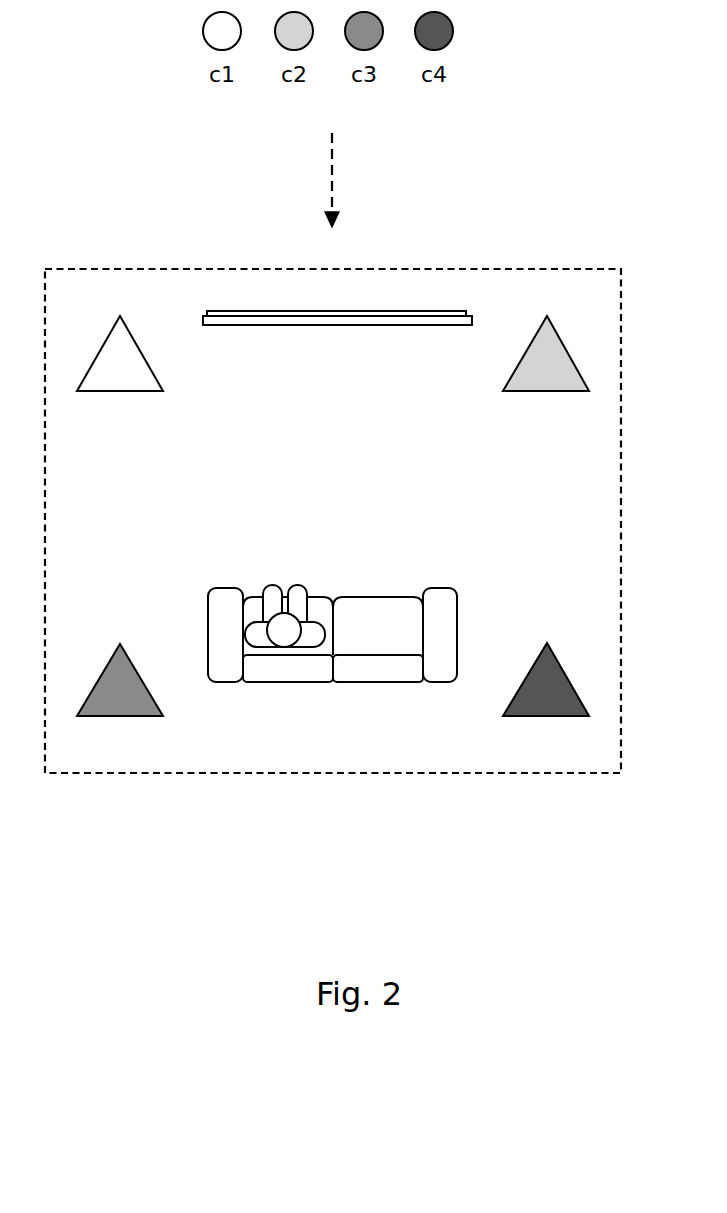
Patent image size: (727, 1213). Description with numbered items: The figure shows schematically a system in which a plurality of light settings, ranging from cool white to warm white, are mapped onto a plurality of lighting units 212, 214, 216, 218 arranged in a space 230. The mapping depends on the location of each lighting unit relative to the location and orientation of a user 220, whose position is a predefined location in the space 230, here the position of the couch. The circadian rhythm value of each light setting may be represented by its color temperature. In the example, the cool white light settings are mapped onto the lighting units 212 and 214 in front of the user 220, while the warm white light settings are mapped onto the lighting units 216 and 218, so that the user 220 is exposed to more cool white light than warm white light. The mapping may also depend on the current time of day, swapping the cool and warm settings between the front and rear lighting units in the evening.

The lighting unit 212 is at (127, 376).
The lighting unit 214 is at (547, 361).
The lighting unit 216 is at (134, 677).
The lighting unit 218 is at (541, 682).
The user 220 is at (297, 593).
The space 230 is at (540, 268).